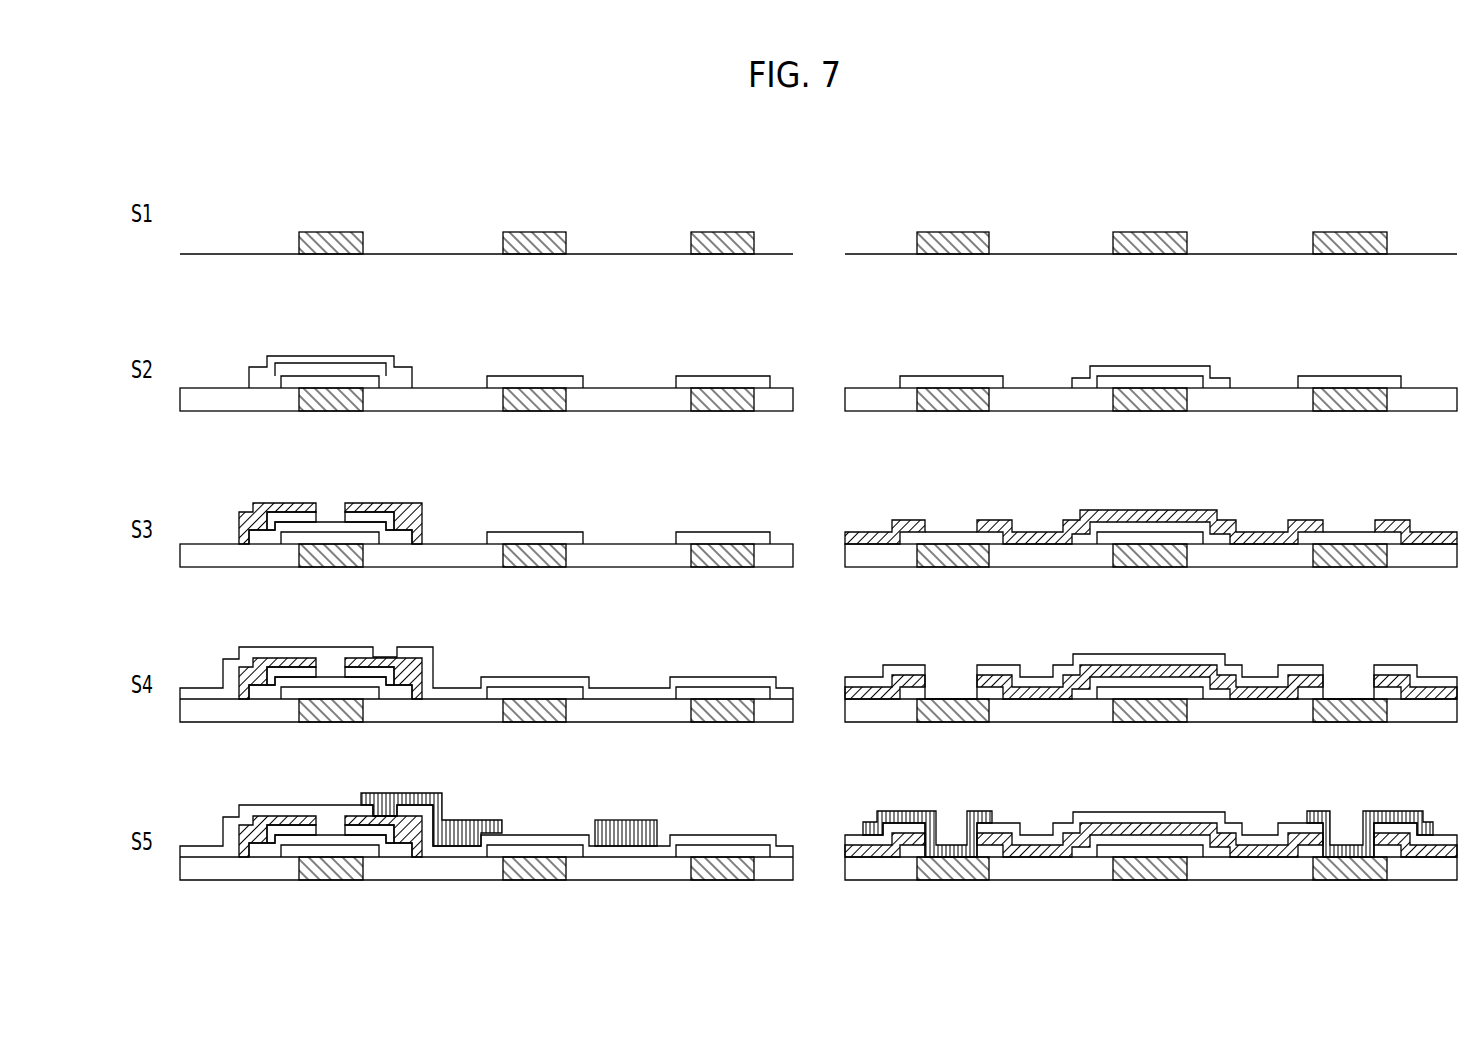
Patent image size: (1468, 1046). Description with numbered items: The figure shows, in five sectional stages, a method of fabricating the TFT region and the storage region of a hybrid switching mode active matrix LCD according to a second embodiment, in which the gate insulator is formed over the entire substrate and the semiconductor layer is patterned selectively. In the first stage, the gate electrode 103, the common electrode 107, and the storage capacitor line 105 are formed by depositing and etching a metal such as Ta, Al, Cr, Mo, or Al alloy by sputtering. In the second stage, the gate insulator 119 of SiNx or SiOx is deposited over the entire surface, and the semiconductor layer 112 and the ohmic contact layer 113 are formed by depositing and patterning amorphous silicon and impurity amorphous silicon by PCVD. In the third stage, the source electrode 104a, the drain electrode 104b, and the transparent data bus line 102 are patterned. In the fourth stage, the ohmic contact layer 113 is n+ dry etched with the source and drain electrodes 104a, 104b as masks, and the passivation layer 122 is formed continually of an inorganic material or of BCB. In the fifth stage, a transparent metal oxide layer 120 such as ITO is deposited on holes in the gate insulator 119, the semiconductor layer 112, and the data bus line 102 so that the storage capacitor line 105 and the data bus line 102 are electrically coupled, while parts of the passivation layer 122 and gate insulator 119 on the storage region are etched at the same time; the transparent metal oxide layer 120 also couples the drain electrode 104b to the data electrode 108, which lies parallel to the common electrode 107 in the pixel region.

The data bus line 102 is at (1197, 518).
The gate electrode 103 is at (346, 232).
The source electrode 104a is at (278, 505).
The drain electrode 104b is at (403, 505).
The storage capacitor line 105 is at (967, 232).
The common electrode 107 is at (548, 232).
The data electrode 108 is at (636, 822).
The semiconductor layer 112 is at (331, 366).
The ohmic contact layer 113 is at (377, 360).
The gate insulator 119 is at (445, 396).
The transparent metal oxide layer 120 is at (472, 826).
The passivation layer 122 is at (569, 680).